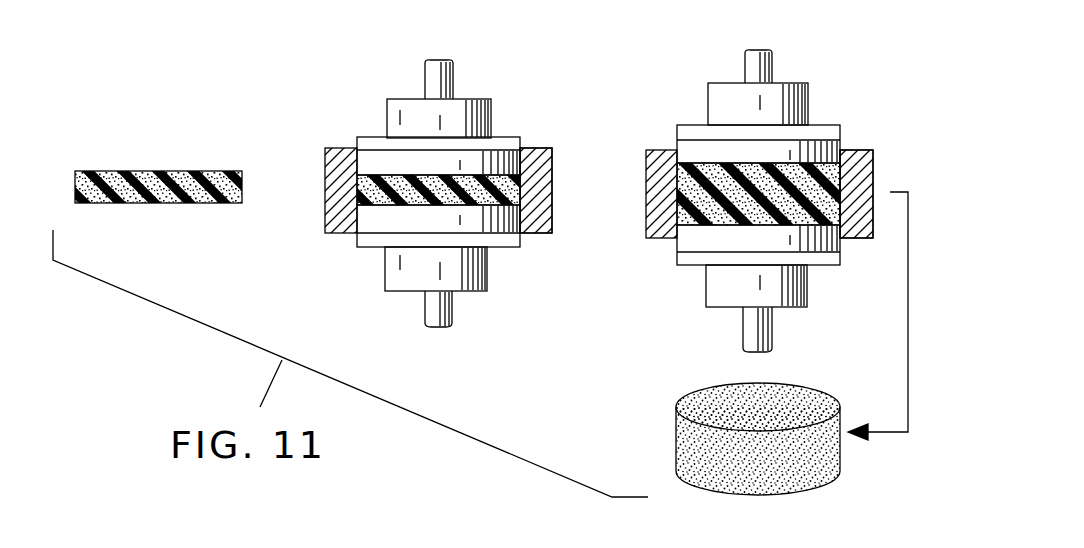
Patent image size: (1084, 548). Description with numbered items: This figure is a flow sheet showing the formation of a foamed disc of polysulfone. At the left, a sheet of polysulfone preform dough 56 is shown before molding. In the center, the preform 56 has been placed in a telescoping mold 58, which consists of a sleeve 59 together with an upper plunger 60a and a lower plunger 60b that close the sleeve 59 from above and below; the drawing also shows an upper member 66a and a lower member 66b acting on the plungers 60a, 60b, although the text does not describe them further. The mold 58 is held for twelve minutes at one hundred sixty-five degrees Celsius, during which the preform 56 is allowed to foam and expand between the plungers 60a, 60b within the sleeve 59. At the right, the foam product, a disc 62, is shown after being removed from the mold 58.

The sheet of polysulfone preform dough 56 is at (172, 171).
The telescoping mold 58 is at (320, 144).
The sleeve 59 is at (545, 158).
The plunger 60a is at (502, 168).
The plunger 60b is at (503, 222).
The upper plunger 66a is at (460, 140).
The lower plunger 66b is at (397, 262).
The disc 62 is at (695, 163).